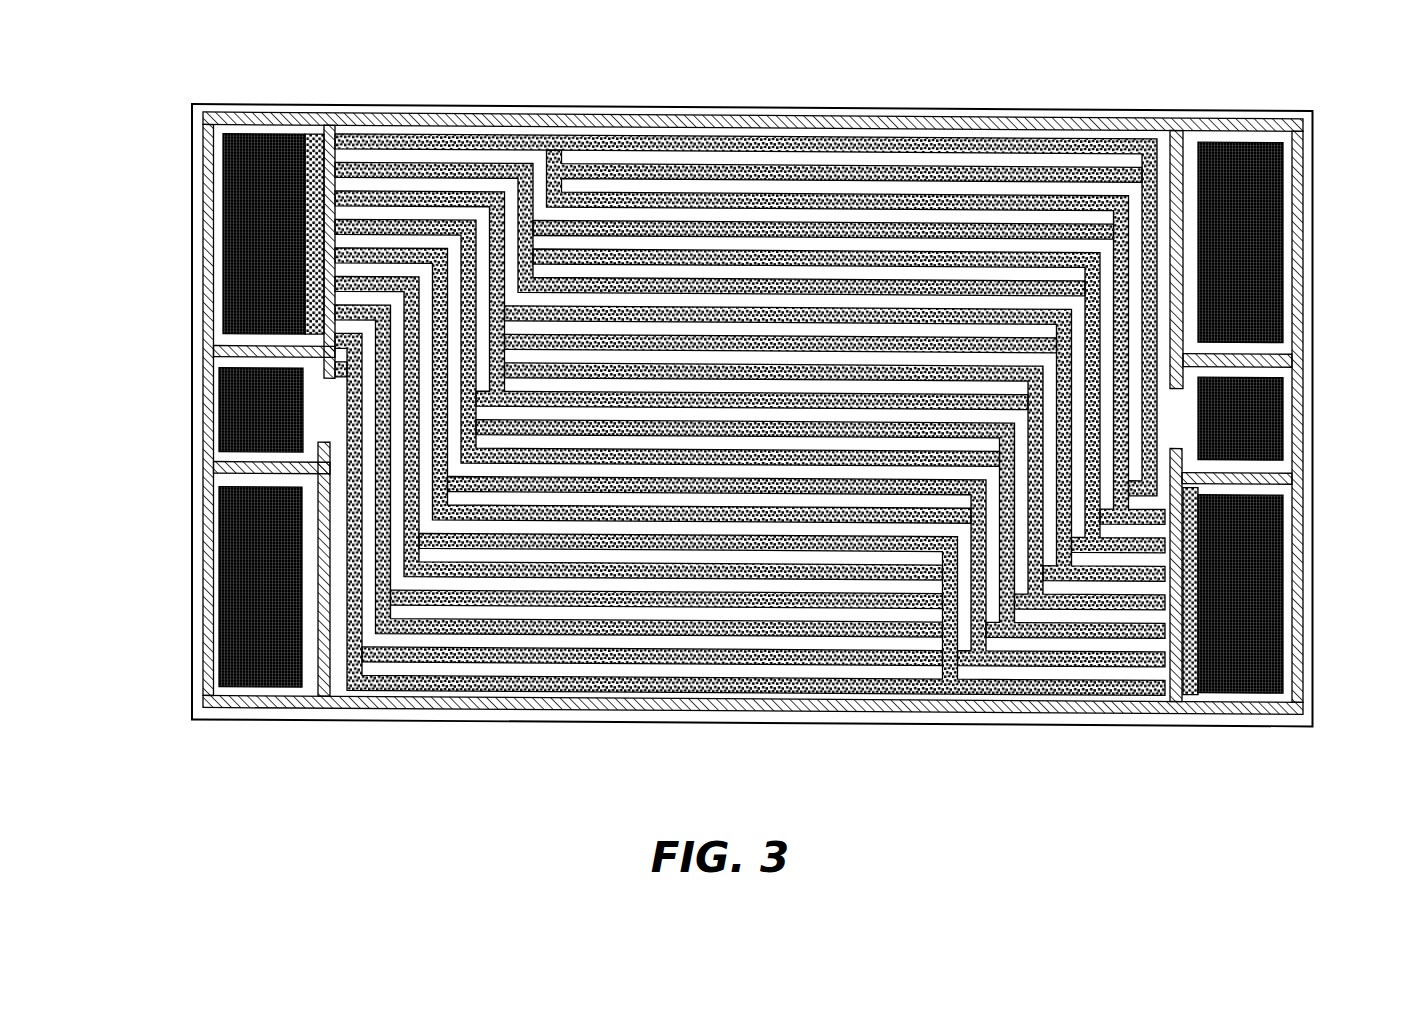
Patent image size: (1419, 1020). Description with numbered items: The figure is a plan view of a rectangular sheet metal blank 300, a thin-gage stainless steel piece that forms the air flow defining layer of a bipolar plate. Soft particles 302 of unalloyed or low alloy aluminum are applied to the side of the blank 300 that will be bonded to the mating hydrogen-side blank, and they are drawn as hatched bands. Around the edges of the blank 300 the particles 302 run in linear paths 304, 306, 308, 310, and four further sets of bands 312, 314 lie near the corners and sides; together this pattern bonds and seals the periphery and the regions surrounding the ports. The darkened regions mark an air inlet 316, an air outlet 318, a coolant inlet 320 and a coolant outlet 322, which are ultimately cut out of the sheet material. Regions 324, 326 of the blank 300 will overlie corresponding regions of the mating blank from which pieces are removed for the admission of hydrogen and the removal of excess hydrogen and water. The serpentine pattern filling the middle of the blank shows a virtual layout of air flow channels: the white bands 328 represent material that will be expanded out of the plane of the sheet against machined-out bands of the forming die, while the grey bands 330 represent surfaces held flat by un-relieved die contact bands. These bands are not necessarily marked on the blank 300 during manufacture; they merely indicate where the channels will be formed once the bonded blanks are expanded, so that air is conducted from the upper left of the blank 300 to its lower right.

The sheet metal blank 300 is at (1215, 108).
The soft particles 302 is at (871, 116).
The linear path of bonding particles 304 is at (1300, 272).
The linear path of bonding particles 306 is at (750, 410).
The linear path of bonding particles 308 is at (200, 598).
The linear path of bonding particles 310 is at (817, 707).
The bands of bonding particles 312 is at (325, 188).
The bands of bonding particles 314 is at (256, 355).
The air inlet 316 is at (225, 233).
The air outlet 318 is at (1273, 630).
The coolant inlet 320 is at (233, 410).
The coolant outlet 322 is at (1263, 420).
The region overlying hydrogen opening 324 is at (242, 625).
The region overlying hydrogen opening 326 is at (1262, 240).
The white bands 328 is at (683, 555).
The grey bands 330 is at (658, 202).